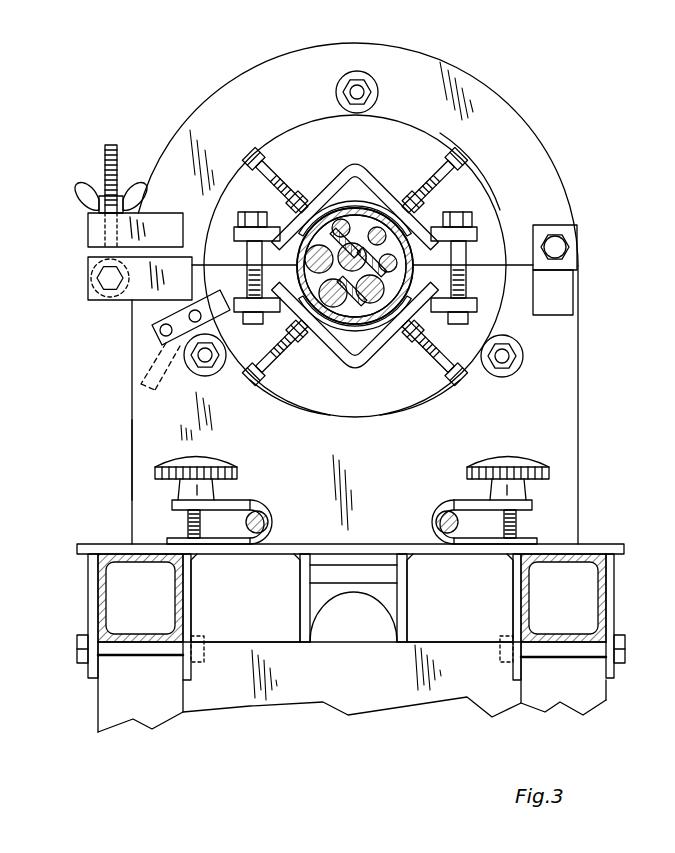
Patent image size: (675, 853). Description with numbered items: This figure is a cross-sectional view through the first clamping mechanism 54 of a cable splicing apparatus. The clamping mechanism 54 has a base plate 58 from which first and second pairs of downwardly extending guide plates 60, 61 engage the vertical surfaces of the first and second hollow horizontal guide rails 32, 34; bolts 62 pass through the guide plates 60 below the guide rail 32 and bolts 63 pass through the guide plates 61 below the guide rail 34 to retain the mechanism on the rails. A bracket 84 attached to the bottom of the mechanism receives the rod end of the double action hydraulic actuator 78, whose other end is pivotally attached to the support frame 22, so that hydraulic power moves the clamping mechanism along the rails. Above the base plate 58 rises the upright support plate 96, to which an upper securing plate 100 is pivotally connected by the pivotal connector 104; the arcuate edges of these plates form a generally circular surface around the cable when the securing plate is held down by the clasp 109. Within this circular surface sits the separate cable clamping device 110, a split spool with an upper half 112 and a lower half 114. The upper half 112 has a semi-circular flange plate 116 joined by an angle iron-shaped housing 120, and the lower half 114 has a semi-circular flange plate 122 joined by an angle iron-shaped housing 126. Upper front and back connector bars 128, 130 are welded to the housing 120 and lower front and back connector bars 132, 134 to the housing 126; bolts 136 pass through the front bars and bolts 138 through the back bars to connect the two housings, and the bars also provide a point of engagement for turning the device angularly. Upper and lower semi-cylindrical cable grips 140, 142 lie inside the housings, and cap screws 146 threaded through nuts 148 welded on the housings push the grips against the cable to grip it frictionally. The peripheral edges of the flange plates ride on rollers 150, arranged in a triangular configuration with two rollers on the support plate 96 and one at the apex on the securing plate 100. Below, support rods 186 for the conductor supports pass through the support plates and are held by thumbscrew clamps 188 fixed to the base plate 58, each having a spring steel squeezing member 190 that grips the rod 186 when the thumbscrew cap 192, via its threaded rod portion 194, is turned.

The support frame 22 is at (625, 577).
The first hollow horizontal guide rail 32 is at (602, 609).
The second hollow horizontal guide rail 34 is at (104, 602).
The first clamping mechanism 54 is at (355, 274).
The base plate 58 is at (108, 545).
The first pair of downwardly extending guide plates 60 is at (91, 681).
The second pair of downwardly extending guide plates 61 is at (513, 597).
The bolts 62 is at (130, 652).
The bolts 63 is at (553, 655).
The double action hydraulic cylinder or actuator 78 is at (364, 629).
The bracket 84 is at (406, 620).
The upright support plate 96 is at (132, 452).
The upper securing plate 100 is at (338, 47).
The pivotal connector 104 is at (578, 291).
The clasp 109 is at (87, 233).
The cable clamping device 110 is at (355, 265).
The upper half 112 is at (484, 192).
The lower half 114 is at (390, 414).
The first semi-circular flange plate 116 is at (300, 132).
The angle iron-shaped housing 120 is at (356, 171).
The first semi-circular flange plate 122 is at (318, 410).
The angle iron-shaped housing 126 is at (337, 363).
The upper front connector bar 128 is at (238, 224).
The upper back connector bar 130 is at (478, 233).
The lower front connector bar 132 is at (236, 313).
The lower back connector bar 134 is at (474, 306).
The bolts 136 is at (238, 249).
The bolts 138 is at (463, 251).
The upper semi-cylindrical cable grip 140 is at (374, 200).
The lower semi-cylindrical cable grip 142 is at (372, 340).
The cap screws 146 is at (254, 160).
The nuts 148 is at (301, 194).
The rollers 150 is at (379, 88).
The support rods 186 is at (270, 516).
The thumbscrew clamps 188 is at (235, 461).
The spring steel squeezing member 190 is at (228, 505).
The thumbscrew cap 192 is at (177, 477).
The threaded rod portion 194 is at (186, 524).